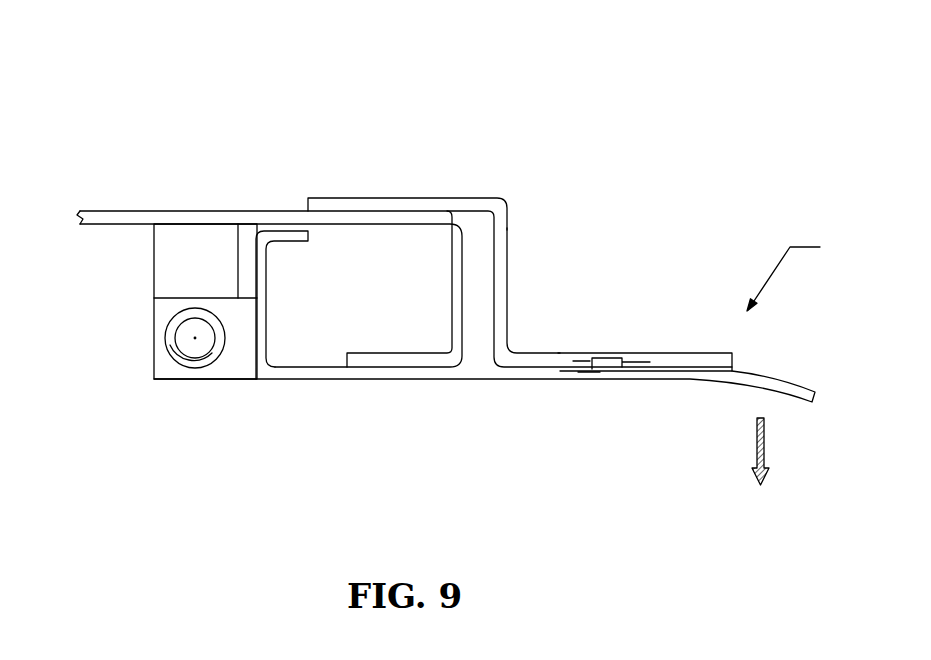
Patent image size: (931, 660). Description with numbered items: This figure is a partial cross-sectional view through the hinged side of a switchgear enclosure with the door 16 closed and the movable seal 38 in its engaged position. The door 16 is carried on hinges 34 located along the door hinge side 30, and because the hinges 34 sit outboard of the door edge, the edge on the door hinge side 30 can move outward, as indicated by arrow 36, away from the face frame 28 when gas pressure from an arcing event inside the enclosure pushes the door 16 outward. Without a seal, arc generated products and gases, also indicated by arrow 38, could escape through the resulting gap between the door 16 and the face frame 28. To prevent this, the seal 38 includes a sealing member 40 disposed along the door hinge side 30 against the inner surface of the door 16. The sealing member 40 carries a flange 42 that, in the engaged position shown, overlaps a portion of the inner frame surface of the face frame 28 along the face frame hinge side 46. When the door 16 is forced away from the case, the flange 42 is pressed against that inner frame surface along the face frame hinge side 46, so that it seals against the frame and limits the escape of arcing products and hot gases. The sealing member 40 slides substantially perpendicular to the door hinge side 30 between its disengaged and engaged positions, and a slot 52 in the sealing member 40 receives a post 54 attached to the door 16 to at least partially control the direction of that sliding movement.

The door 16 is at (675, 378).
The face frame 28 is at (167, 220).
The door hinge side 30 is at (262, 381).
The hinges 34 is at (152, 324).
The arrow 36 is at (768, 447).
The movable seal 38 is at (808, 276).
The sealing member 40 is at (558, 353).
The flange 42 is at (500, 215).
The face frame hinge side 46 is at (245, 207).
The slots 52 is at (617, 358).
The post 54 is at (587, 368).